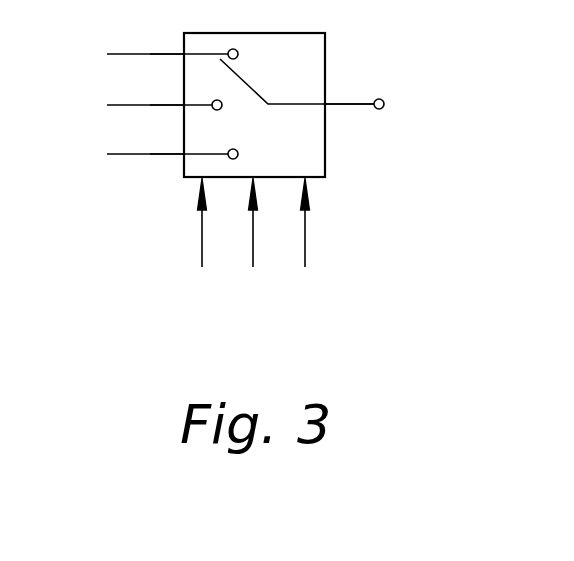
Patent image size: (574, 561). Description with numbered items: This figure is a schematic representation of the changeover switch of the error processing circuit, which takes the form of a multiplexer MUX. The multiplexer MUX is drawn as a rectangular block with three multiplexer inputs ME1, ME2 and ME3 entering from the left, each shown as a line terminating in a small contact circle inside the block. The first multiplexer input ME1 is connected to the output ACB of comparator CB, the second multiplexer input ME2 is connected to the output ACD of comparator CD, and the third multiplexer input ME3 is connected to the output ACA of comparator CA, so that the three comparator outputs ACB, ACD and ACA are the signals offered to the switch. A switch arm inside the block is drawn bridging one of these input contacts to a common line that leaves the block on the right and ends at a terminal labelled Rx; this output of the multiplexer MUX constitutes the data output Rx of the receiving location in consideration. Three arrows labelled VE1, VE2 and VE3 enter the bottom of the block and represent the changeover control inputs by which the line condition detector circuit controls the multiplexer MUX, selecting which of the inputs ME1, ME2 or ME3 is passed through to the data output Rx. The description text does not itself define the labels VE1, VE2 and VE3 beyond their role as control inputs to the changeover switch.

The multiplexer MUX is at (279, 105).
The comparator output ACB is at (146, 56).
The comparator output ACD is at (138, 107).
The comparator output ACA is at (146, 156).
The multiplexer input ME1 is at (159, 35).
The multiplexer input ME2 is at (159, 85).
The multiplexer input ME3 is at (159, 135).
The data output Rx is at (371, 107).
The control signal VE1 is at (202, 242).
The control signal VE2 is at (252, 242).
The control signal VE3 is at (305, 242).